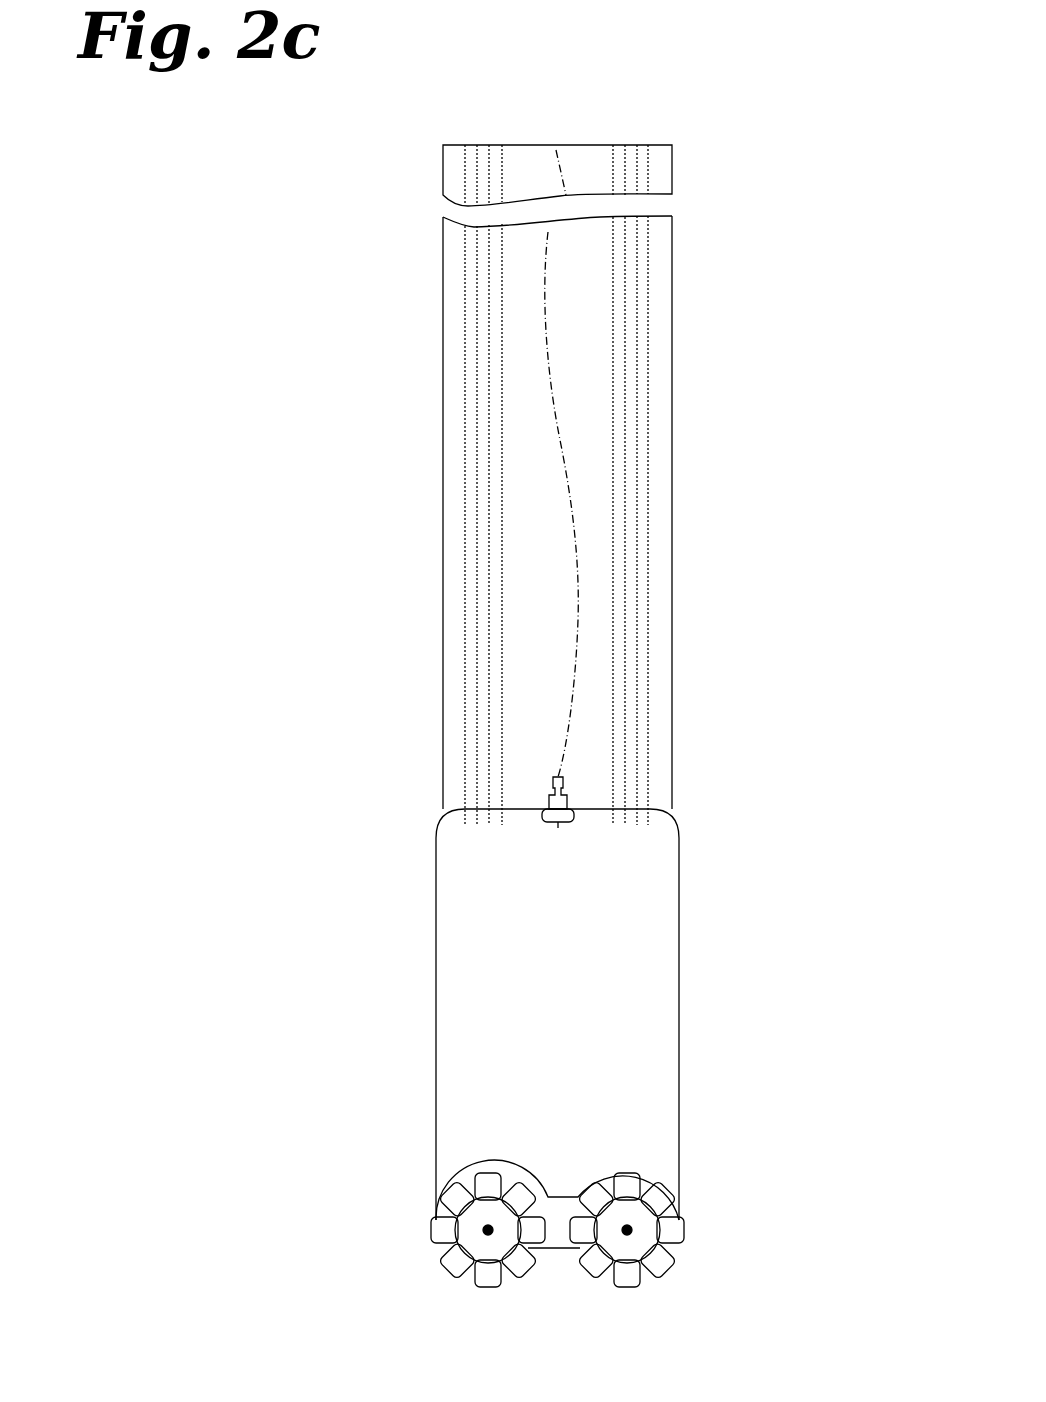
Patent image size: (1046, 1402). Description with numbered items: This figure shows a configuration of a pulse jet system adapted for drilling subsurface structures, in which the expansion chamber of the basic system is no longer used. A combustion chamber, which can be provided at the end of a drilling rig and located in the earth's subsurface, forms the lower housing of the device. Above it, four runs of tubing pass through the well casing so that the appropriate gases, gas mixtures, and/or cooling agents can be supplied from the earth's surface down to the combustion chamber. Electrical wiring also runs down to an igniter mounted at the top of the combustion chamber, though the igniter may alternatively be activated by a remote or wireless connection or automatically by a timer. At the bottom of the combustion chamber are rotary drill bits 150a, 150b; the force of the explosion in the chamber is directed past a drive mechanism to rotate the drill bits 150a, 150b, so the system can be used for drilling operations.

The rotary drill bit 150a is at (436, 1222).
The rotary drill bit 150b is at (679, 1222).